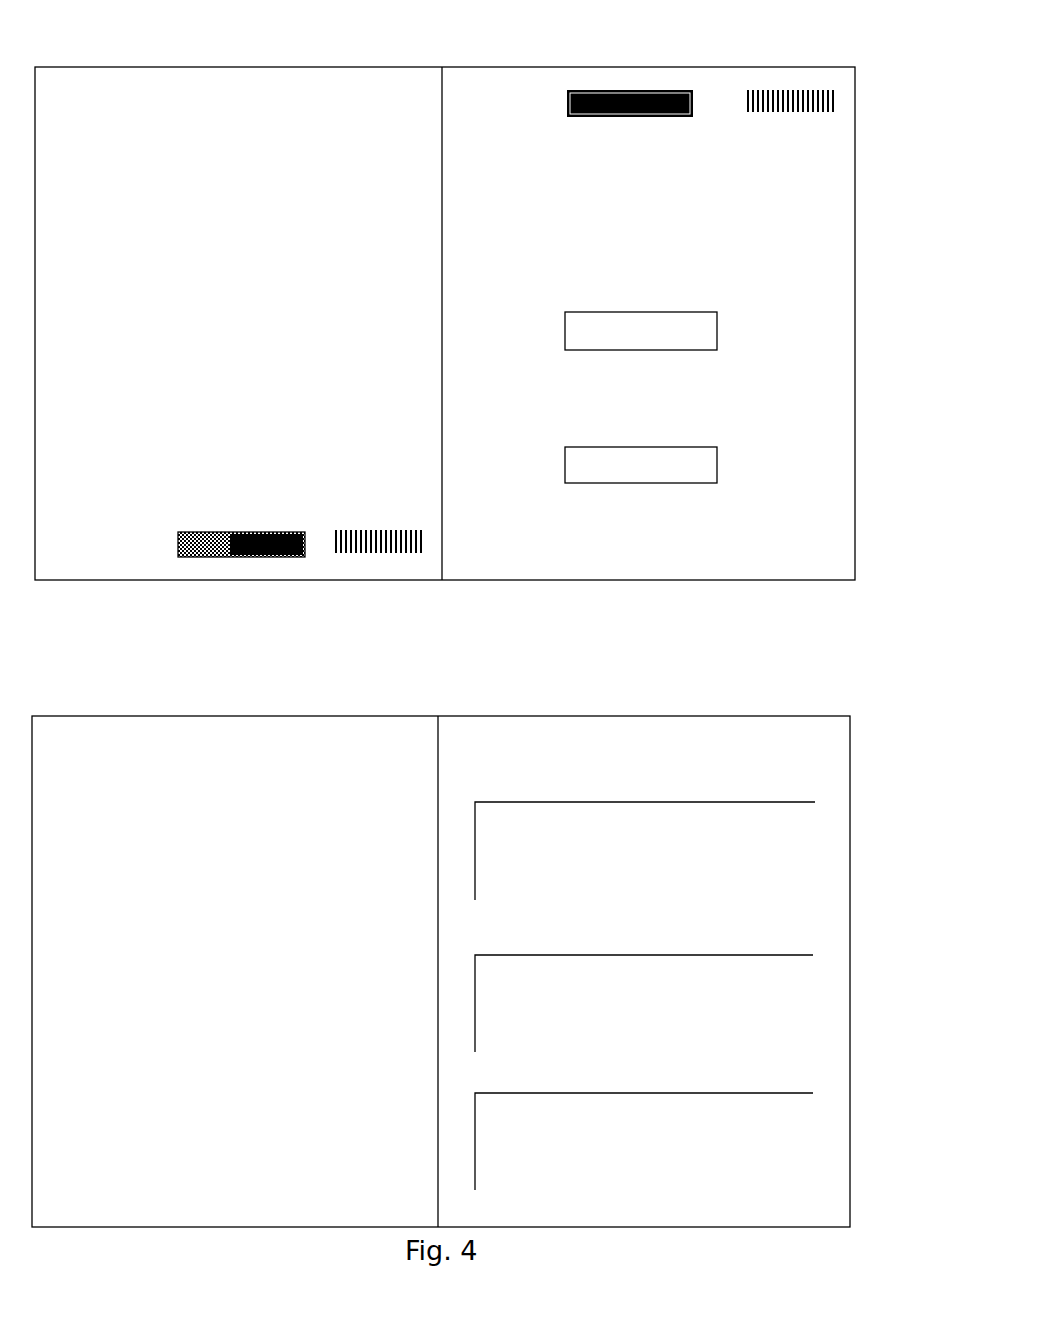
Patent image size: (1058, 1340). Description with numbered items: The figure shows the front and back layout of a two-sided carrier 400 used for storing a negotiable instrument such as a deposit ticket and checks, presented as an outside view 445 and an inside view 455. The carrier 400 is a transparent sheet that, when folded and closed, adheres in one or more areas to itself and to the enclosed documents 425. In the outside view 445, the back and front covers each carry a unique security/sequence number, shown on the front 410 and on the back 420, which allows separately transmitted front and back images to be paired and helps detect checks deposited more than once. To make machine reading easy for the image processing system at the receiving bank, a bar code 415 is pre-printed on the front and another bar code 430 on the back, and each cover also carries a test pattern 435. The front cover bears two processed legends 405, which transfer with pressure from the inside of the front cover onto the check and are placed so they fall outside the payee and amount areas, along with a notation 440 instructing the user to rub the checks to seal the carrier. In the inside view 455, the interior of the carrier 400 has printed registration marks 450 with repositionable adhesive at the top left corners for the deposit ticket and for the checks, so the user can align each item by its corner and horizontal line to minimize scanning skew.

The carrier 400 is at (857, 66).
The processed legend 405 is at (567, 361).
The front security/sequence number 410 is at (505, 79).
The bar code 415 is at (807, 79).
The back security/sequence number 420 is at (92, 556).
The enclosed documents 425 is at (243, 65).
The bar code 430 is at (363, 556).
The test pattern 435 is at (618, 79).
The notation to rub the checks to seal the carrier 440 is at (782, 576).
The outside view 445 is at (222, 17).
The registration marks 450 is at (462, 1142).
The inside view 455 is at (195, 666).